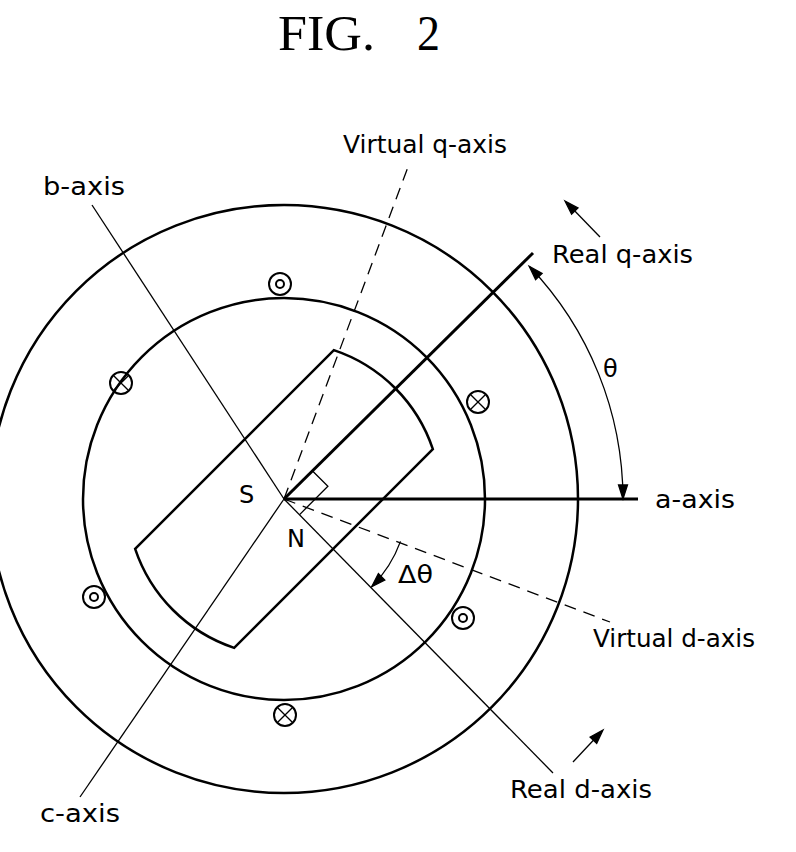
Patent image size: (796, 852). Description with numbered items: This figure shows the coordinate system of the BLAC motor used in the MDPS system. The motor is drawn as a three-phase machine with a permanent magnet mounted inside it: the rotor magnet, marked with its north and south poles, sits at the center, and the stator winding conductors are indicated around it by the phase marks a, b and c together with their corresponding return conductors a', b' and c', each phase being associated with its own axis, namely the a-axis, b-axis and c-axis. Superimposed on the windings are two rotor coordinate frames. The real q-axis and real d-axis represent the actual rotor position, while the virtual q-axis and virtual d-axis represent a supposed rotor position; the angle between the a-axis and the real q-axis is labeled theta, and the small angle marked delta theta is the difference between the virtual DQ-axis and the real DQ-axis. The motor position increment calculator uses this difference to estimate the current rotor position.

The phase a coil a is at (290, 276).
The phase b coil b is at (108, 379).
The phase c coil c is at (84, 603).
The phase a return coil a' is at (294, 725).
The phase b return coil b' is at (479, 620).
The phase c return coil c' is at (490, 394).